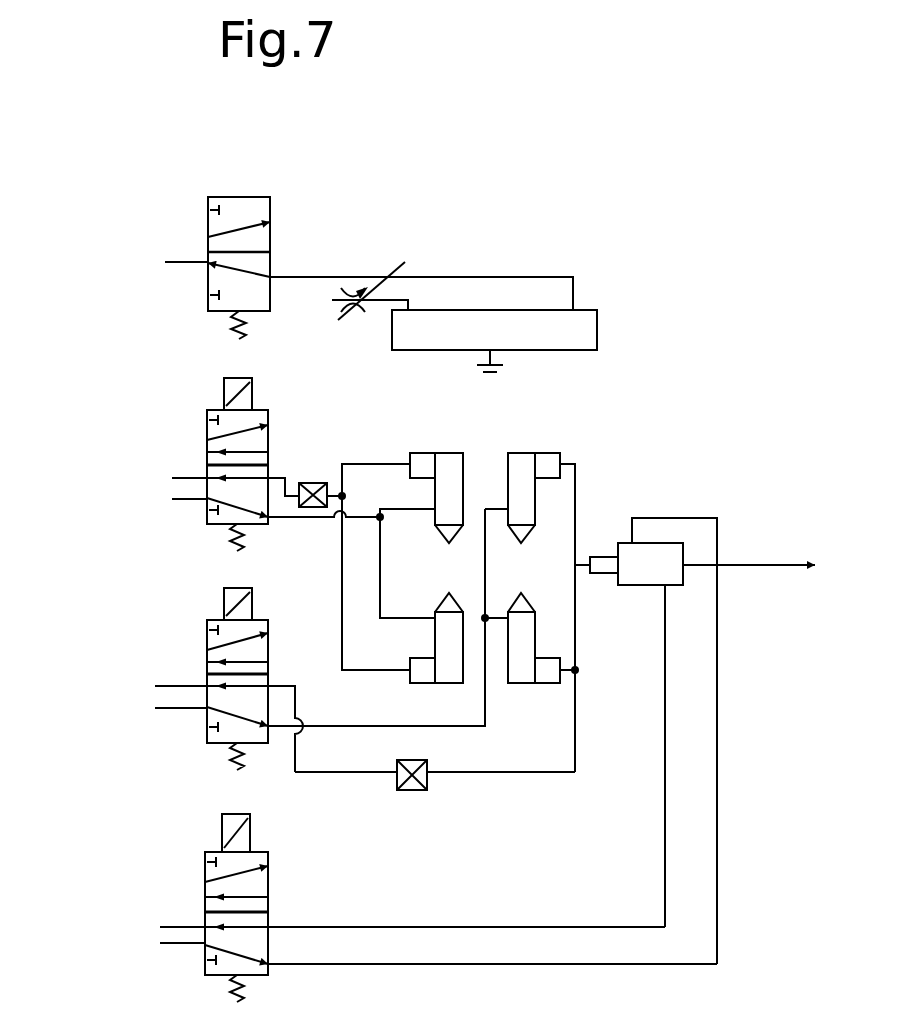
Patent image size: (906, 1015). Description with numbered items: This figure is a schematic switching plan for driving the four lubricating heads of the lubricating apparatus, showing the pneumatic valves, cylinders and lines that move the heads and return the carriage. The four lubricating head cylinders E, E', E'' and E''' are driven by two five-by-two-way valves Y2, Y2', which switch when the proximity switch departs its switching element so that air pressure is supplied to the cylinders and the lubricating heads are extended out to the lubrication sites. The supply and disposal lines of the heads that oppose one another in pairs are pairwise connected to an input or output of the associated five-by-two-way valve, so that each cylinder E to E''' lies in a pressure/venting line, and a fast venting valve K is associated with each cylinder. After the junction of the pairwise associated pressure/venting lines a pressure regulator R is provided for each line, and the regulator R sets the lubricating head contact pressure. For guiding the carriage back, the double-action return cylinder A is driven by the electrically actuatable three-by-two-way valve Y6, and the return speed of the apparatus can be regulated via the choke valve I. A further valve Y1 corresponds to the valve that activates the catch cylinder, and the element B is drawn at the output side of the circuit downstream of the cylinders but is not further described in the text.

The 3/2-way valve Y6 is at (183, 268).
The 5/2-way valve Y2 is at (150, 679).
The 5/2-way valve Y2' is at (148, 464).
The valve Y1 is at (152, 908).
The choke valve I is at (490, 325).
The return cylinder A is at (580, 337).
The pressure regulator R is at (312, 482).
The lubricating head cylinder E is at (521, 477).
The lubricating head cylinder E' is at (437, 477).
The lubricating head cylinder E'' is at (534, 670).
The lubricating head cylinder E''' is at (436, 661).
The fast venting valve K is at (548, 462).
The output actuator B is at (658, 560).